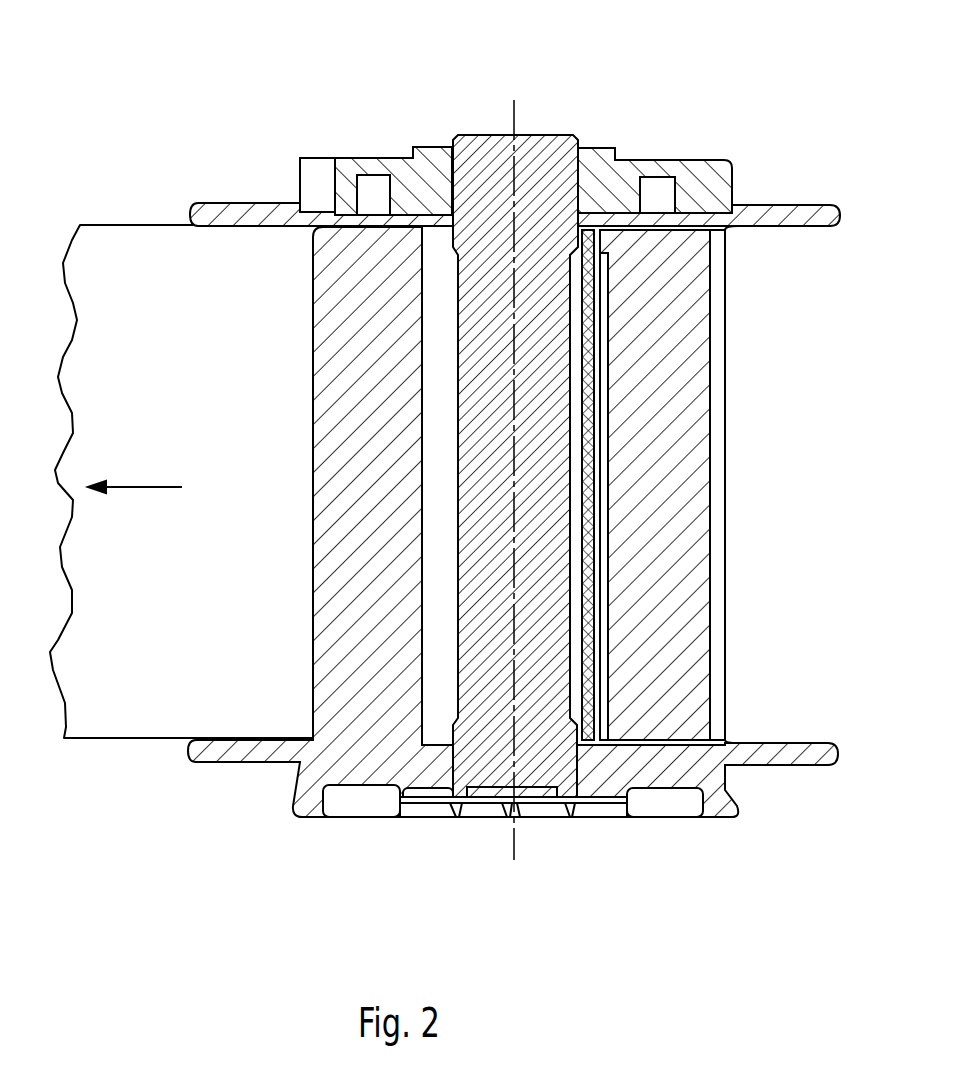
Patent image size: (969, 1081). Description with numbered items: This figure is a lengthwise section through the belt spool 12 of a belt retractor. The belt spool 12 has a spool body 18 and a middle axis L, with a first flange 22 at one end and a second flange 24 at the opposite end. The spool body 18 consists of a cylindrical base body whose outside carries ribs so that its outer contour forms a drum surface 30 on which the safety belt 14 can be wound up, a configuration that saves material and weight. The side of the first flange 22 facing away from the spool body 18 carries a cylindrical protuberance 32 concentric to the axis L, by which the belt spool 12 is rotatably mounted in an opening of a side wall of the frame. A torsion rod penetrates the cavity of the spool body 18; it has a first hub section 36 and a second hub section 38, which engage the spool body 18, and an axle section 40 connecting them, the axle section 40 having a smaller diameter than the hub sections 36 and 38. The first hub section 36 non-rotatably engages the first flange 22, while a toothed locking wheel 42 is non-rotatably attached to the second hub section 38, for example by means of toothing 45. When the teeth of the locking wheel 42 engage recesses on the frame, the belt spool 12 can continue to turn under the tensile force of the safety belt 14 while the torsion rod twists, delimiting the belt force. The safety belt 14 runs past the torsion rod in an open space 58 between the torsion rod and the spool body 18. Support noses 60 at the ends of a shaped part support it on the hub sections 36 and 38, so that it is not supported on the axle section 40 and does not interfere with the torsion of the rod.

The belt spool 12 is at (638, 76).
The safety belt 14 is at (100, 715).
The spool body 18 is at (680, 414).
The first flange 22 is at (780, 760).
The second flange 24 is at (218, 212).
The drum surface 30 is at (306, 637).
The cylindrical protuberance 32 is at (316, 800).
The first hub section 36 is at (462, 770).
The second hub section 38 is at (481, 152).
The axle section 40 is at (540, 556).
The locking wheel 42 is at (705, 175).
The toothing 45 is at (441, 170).
The open space 58 is at (612, 320).
The support noses 60 is at (605, 236).
The middle axis L is at (540, 497).